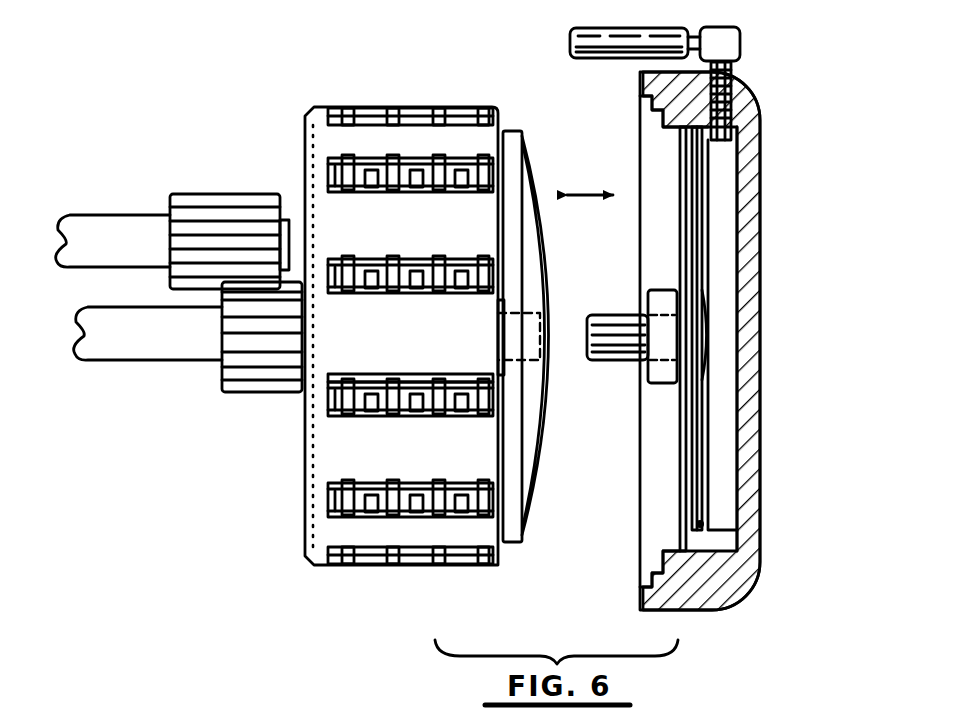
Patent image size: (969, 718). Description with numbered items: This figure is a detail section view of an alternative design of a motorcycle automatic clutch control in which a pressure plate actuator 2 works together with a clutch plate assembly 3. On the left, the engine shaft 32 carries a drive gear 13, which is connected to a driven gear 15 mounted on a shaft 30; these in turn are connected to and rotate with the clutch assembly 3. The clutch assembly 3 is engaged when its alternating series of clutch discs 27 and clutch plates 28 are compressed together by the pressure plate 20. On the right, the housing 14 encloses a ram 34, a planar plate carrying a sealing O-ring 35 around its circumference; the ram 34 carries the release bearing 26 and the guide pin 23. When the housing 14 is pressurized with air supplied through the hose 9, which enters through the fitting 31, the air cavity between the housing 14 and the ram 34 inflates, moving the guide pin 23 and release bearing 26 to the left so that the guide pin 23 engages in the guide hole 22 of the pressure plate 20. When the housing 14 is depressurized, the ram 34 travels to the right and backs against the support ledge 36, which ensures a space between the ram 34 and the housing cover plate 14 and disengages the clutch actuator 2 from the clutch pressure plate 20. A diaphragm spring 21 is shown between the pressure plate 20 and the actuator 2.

The pressure plate actuator 2 is at (620, 158).
The clutch plate assembly 3 is at (405, 98).
The hose 9 is at (596, 61).
The drive gear 13 is at (211, 191).
The housing 14 is at (764, 300).
The driven gear 15 is at (252, 394).
The pressure plate 20 is at (522, 524).
The diaphragm spring 21 is at (546, 314).
The guide hole 22 is at (494, 344).
The guide pin 23 is at (612, 363).
The release bearing 26 is at (660, 287).
The clutch discs 27 is at (345, 515).
The clutch plates 28 is at (374, 485).
The shaft 30 is at (146, 338).
The fitting 31 is at (719, 112).
The engine shaft 32 is at (134, 225).
The ram 34 is at (675, 448).
The sealing O-ring 35 is at (690, 478).
The support ledge 36 is at (702, 523).